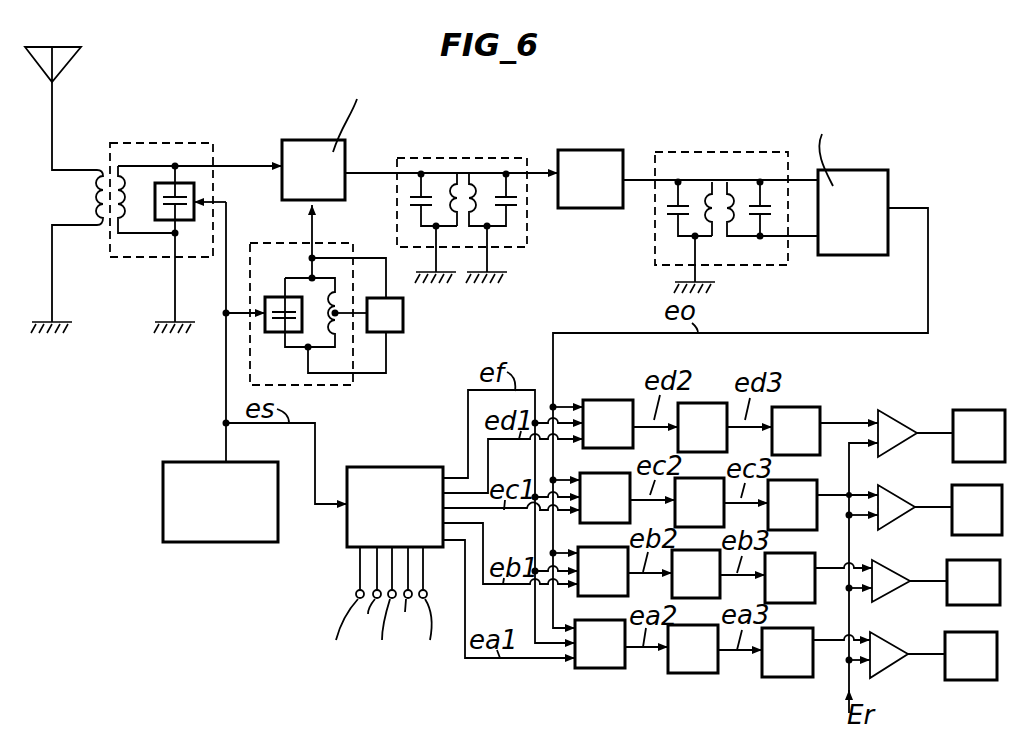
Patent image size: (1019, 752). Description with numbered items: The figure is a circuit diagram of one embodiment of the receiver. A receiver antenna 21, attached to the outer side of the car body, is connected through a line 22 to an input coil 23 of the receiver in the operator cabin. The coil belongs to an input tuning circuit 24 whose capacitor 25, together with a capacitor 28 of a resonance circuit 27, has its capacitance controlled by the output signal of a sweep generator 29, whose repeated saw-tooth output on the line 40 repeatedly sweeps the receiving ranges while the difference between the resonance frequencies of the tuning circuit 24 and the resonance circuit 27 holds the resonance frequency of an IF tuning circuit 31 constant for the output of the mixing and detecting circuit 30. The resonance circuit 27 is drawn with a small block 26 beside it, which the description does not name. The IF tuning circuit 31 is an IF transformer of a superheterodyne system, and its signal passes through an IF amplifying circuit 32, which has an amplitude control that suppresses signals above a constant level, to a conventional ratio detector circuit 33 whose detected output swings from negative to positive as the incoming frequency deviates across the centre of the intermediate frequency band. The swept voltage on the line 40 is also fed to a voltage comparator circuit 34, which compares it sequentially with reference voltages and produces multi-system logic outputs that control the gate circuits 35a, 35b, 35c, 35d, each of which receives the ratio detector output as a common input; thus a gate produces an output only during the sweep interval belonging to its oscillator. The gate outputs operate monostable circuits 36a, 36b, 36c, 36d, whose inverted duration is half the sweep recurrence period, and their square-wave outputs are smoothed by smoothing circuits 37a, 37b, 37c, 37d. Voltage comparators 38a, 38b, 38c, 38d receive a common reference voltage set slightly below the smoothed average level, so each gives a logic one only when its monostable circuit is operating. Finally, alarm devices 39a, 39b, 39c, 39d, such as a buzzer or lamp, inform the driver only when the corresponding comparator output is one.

The receiver antenna 21 is at (72, 57).
The line 22 is at (52, 112).
The input coil 23 is at (97, 215).
The input tuning circuit 24 is at (171, 143).
The capacitor 25 is at (160, 220).
The oscillator unit 26 is at (403, 315).
The resonance circuit 27 is at (320, 384).
The capacitor 28 is at (264, 331).
The sweep generator 29 is at (190, 476).
The mixing and detecting circuit 30 is at (303, 155).
The IF tuning circuit 31 is at (474, 158).
The IF amplifying circuit 32 is at (597, 131).
The ratio detector circuit 33 is at (875, 186).
The voltage comparator circuit 34 is at (395, 470).
The gate circuit 35a is at (600, 644).
The gate circuit 35b is at (603, 571).
The gate circuit 35c is at (605, 498).
The gate circuit 35d is at (608, 424).
The monostable circuit 36a is at (693, 649).
The monostable circuit 36b is at (696, 574).
The monostable circuit 36c is at (699, 502).
The monostable circuit 36d is at (702, 427).
The smoothing circuit 37a is at (787, 652).
The smoothing circuit 37b is at (790, 578).
The smoothing circuit 37c is at (792, 505).
The smoothing circuit 37d is at (796, 431).
The voltage comparator 38a is at (895, 649).
The voltage comparator 38b is at (898, 576).
The voltage comparator 38c is at (912, 486).
The voltage comparator 38d is at (903, 427).
The alarm device 39a is at (971, 656).
The alarm device 39b is at (973, 582).
The alarm device 39c is at (977, 510).
The alarm device 39d is at (979, 436).
The line 40 is at (315, 451).